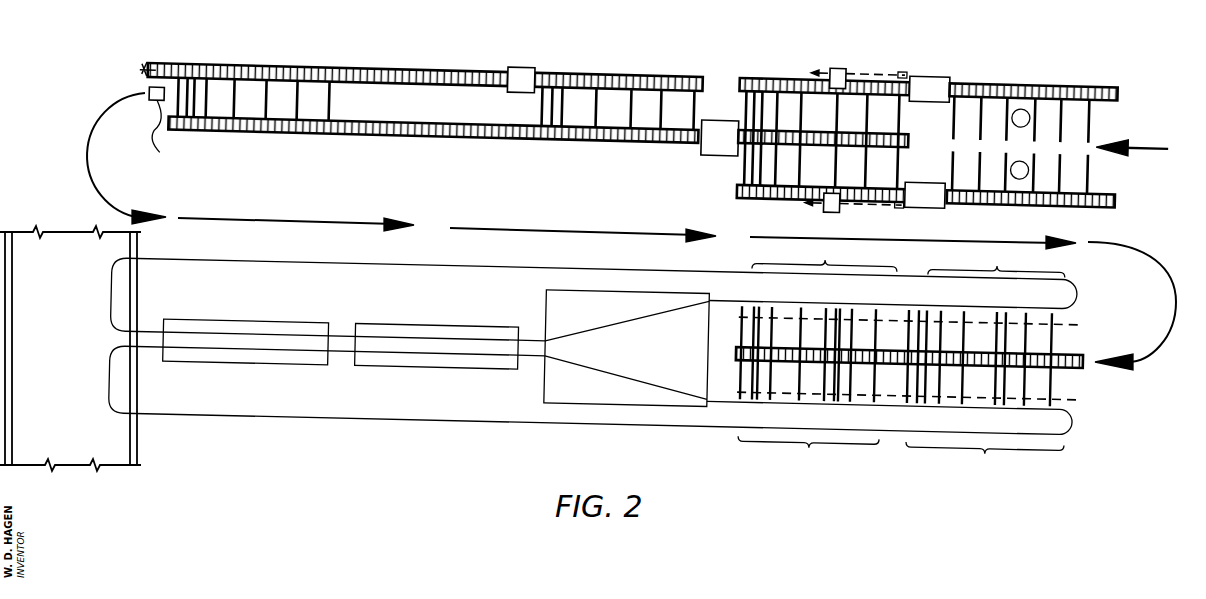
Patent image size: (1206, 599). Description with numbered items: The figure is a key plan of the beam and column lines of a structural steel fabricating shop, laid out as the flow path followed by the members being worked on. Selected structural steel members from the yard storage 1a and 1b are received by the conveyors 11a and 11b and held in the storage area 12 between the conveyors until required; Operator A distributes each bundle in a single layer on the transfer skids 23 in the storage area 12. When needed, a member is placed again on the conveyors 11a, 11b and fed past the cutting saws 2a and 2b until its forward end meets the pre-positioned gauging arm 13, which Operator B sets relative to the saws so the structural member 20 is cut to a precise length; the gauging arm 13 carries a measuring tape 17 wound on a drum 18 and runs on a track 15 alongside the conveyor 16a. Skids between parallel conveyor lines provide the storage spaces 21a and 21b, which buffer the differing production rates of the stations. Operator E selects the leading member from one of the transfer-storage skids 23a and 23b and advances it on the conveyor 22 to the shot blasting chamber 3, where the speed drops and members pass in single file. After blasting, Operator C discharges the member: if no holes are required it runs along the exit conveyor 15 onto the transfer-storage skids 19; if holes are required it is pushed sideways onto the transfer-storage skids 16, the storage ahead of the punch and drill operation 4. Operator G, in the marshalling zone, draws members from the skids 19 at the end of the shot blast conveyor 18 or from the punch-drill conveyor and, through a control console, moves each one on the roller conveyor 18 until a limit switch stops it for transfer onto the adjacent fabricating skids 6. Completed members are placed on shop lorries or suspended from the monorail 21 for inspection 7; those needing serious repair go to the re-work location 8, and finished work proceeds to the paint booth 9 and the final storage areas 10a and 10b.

The yard storage 1a is at (1021, 118).
The yard storage 1b is at (1019, 170).
The cutting saw 2a is at (932, 59).
The cutting saw 2b is at (938, 186).
The shot blasting chamber 3 is at (716, 144).
The punch and drill operation 4 is at (526, 58).
The fabricating skids 6 is at (893, 307).
The inspection 7 is at (655, 279).
The re-work location 8 is at (452, 310).
The paint booth 9 is at (283, 318).
The final storage area 10a is at (572, 305).
The final storage area 10b is at (566, 390).
The conveyor 11a is at (1006, 73).
The conveyor 11b is at (1002, 182).
The storage area 12 is at (1077, 76).
The gauging arm 13 is at (848, 52).
The exit conveyor 15 is at (600, 121).
The transfer-storage skids 16 is at (640, 84).
The conveyor 16a is at (757, 63).
The measuring tape 17 is at (580, 67).
The roller conveyor 18 is at (238, 69).
The transfer-storage skids 19 is at (258, 82).
The structural member 20 is at (165, 137).
The monorail 21 is at (628, 256).
The storage space 21a is at (795, 83).
The storage space 21b is at (793, 158).
The conveyor 22 is at (923, 123).
The transfer skids 23 is at (1080, 112).
The transfer-storage skids 23a is at (866, 108).
The transfer-storage skids 23b is at (884, 147).